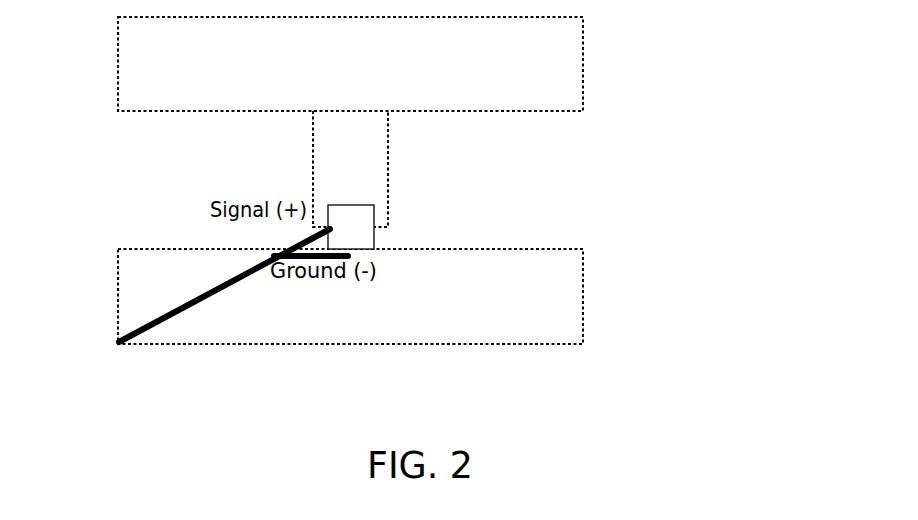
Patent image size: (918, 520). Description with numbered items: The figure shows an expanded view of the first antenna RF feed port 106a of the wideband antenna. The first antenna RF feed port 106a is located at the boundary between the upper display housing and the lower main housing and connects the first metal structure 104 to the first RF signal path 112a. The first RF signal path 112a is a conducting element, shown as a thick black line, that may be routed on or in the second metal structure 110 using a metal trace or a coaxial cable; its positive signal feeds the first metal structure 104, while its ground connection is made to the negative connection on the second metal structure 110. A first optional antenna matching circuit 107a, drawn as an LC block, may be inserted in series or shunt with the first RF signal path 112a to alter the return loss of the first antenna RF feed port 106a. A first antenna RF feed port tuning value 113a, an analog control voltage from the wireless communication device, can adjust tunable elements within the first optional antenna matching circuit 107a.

The first metal structure 104 is at (350, 64).
The second metal structure 110 is at (350, 296).
The first antenna RF feed port 106a is at (352, 157).
The first optional antenna matching circuit 107a is at (357, 213).
The first RF signal path 112a is at (118, 343).
The first antenna RF feed port tuning value 113a is at (378, 243).